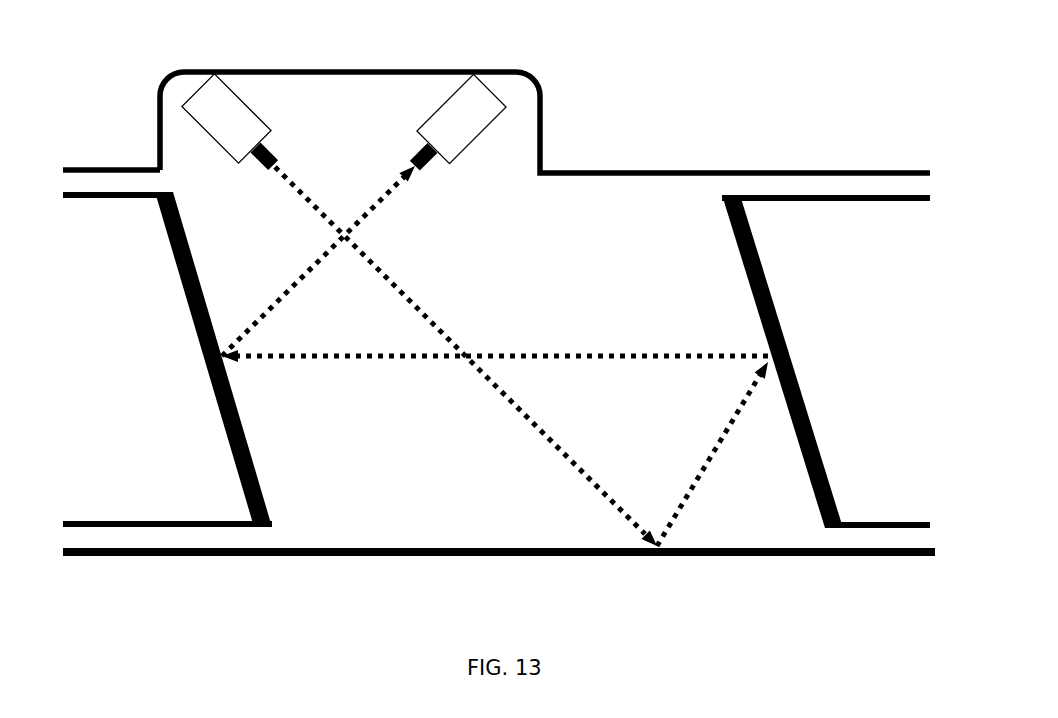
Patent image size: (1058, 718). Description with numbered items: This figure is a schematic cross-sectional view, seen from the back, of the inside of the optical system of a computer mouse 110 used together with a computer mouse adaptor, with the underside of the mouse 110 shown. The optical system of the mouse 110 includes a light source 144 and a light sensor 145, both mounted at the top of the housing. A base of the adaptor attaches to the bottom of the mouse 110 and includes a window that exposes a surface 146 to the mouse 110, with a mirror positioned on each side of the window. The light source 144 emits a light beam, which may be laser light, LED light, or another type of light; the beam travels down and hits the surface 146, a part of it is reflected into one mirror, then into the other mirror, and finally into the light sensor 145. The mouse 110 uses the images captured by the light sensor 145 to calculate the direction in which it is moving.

The mouse 110 is at (542, 140).
The light source 144 is at (232, 121).
The light sensor 145 is at (448, 122).
The surface 146 is at (482, 555).